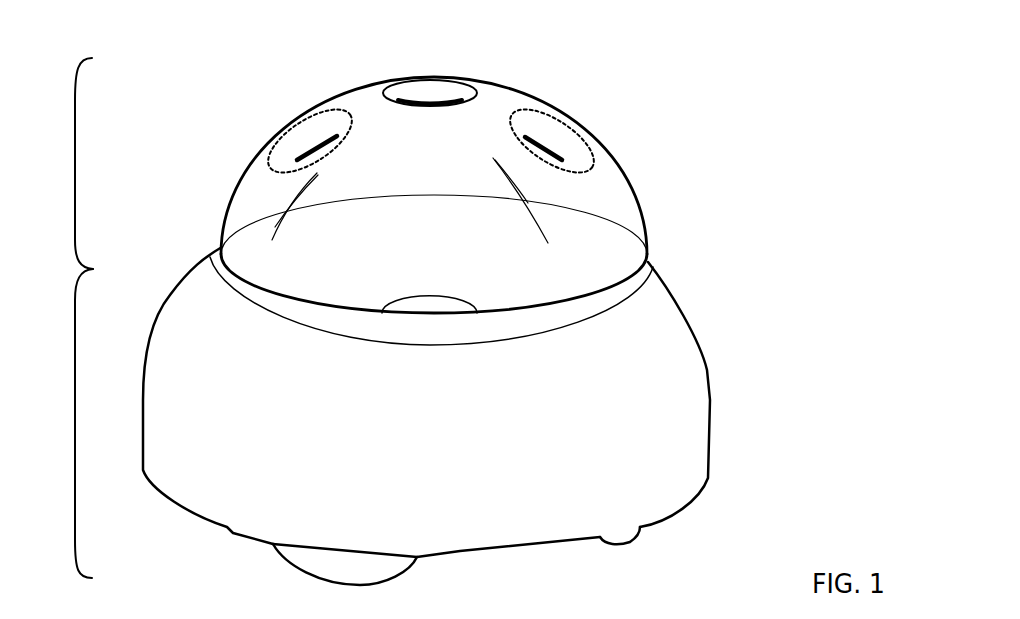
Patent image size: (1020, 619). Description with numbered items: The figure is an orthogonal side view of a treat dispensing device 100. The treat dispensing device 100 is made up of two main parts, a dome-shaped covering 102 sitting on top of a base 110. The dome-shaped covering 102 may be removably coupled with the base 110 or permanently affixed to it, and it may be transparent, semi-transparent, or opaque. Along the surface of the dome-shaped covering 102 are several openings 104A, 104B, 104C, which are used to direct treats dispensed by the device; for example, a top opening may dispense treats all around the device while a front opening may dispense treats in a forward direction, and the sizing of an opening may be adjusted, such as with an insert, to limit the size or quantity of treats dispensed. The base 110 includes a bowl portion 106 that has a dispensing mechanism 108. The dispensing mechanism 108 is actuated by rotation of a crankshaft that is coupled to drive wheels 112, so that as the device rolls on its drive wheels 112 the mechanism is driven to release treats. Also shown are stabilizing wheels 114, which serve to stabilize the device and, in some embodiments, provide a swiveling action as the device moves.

The treat dispensing device 100 is at (741, 40).
The dome-shaped covering 102 is at (393, 185).
The opening 104A is at (478, 95).
The opening 104B is at (277, 142).
The opening 104C is at (563, 132).
The bowl portion 106 is at (588, 268).
The dispensing mechanism 108 is at (435, 305).
The base 110 is at (371, 427).
The drive wheels 112 is at (293, 568).
The stabilizing wheels 114 is at (600, 538).